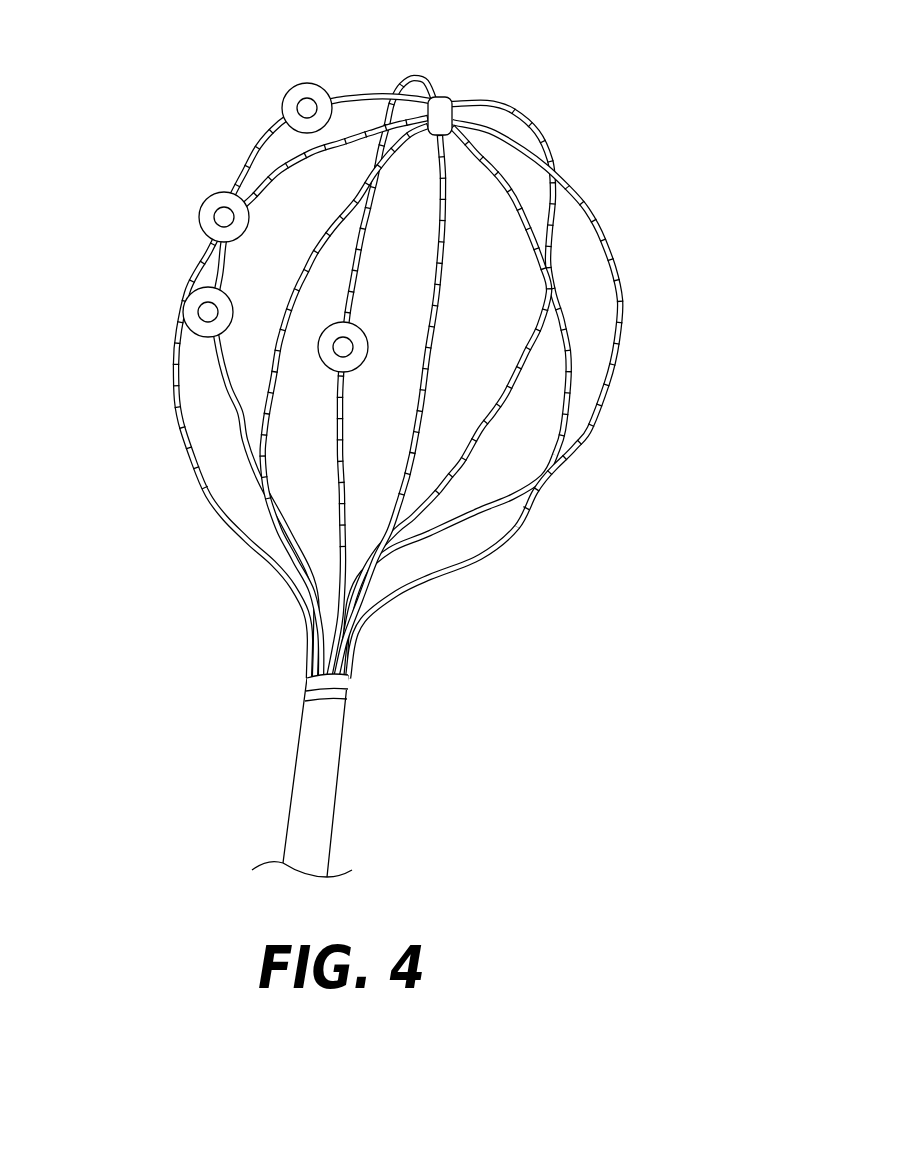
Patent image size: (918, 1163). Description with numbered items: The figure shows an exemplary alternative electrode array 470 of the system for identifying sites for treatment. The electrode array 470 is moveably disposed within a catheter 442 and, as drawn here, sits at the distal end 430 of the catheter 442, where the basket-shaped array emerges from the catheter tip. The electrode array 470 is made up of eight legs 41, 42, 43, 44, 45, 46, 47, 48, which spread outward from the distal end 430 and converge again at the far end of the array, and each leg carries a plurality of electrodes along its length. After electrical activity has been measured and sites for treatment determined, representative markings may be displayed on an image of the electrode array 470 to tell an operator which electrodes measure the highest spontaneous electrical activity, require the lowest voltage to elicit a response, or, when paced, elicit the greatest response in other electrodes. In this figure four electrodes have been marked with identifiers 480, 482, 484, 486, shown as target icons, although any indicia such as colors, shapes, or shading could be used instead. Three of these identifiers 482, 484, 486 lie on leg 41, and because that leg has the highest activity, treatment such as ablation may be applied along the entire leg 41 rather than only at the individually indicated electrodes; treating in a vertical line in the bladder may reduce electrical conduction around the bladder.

The electrode array 470 is at (413, 339).
The leg 41 is at (293, 537).
The leg 42 is at (207, 490).
The leg 43 is at (277, 382).
The leg 44 is at (343, 480).
The leg 45 is at (417, 440).
The leg 46 is at (573, 443).
The leg 47 is at (620, 367).
The leg 48 is at (540, 160).
The identifier 480 is at (358, 320).
The identifier 482 is at (227, 296).
The identifier 484 is at (200, 213).
The identifier 486 is at (291, 99).
The distal end 430 is at (350, 682).
The catheter 442 is at (337, 783).